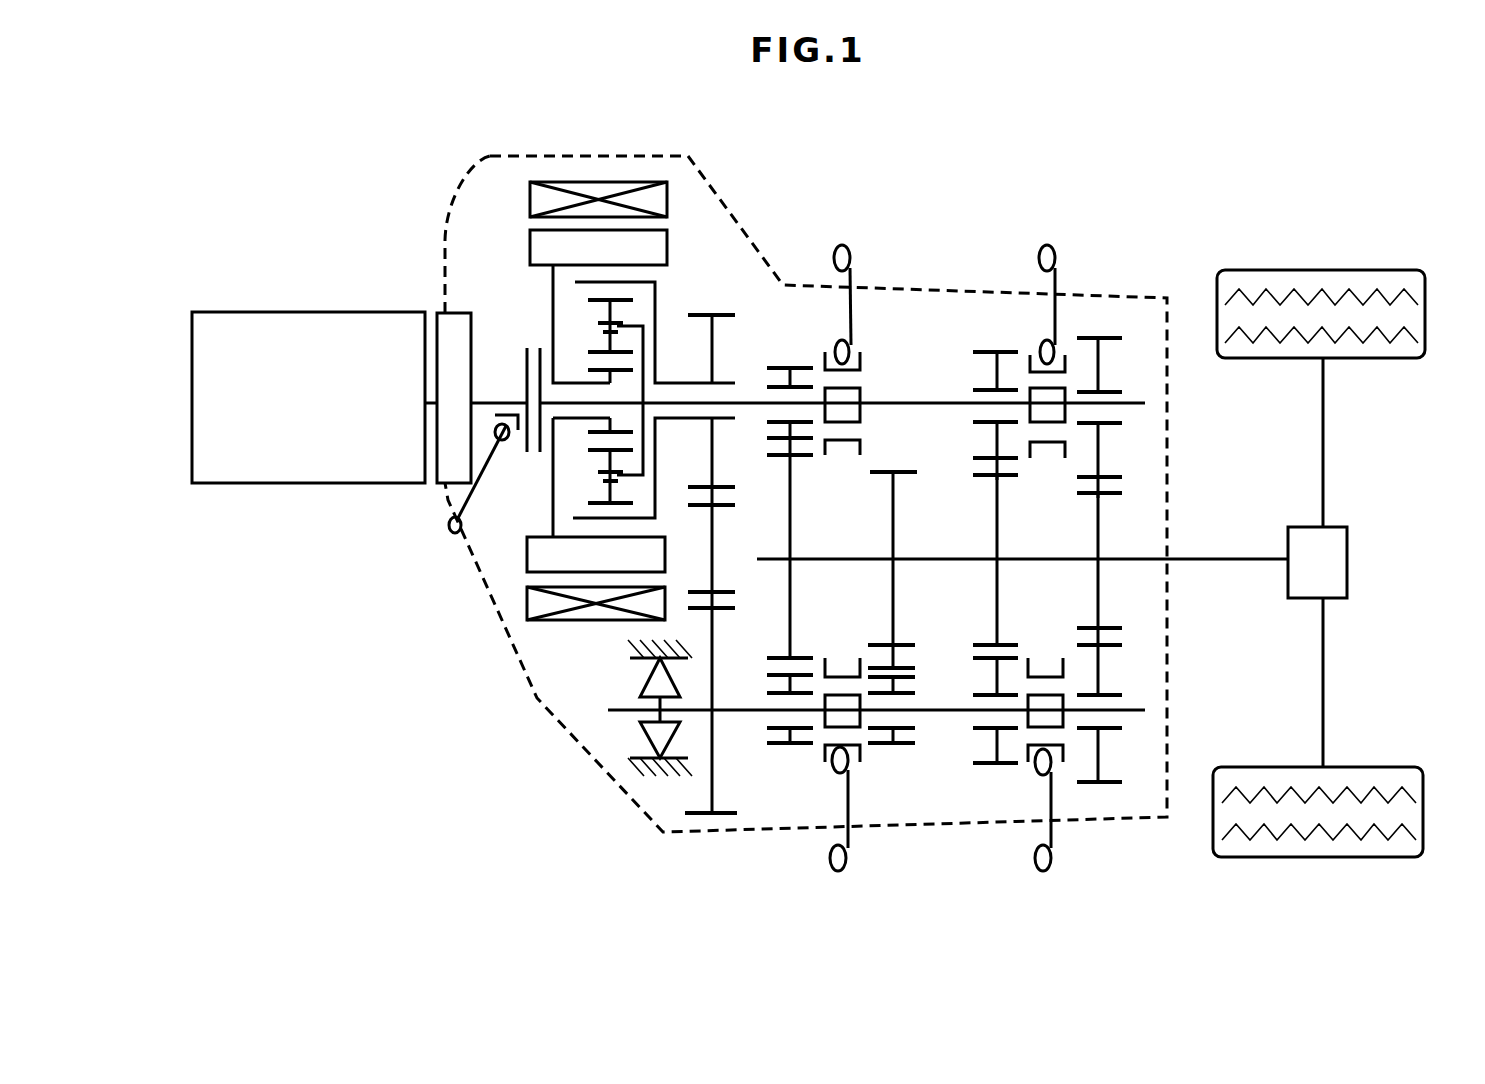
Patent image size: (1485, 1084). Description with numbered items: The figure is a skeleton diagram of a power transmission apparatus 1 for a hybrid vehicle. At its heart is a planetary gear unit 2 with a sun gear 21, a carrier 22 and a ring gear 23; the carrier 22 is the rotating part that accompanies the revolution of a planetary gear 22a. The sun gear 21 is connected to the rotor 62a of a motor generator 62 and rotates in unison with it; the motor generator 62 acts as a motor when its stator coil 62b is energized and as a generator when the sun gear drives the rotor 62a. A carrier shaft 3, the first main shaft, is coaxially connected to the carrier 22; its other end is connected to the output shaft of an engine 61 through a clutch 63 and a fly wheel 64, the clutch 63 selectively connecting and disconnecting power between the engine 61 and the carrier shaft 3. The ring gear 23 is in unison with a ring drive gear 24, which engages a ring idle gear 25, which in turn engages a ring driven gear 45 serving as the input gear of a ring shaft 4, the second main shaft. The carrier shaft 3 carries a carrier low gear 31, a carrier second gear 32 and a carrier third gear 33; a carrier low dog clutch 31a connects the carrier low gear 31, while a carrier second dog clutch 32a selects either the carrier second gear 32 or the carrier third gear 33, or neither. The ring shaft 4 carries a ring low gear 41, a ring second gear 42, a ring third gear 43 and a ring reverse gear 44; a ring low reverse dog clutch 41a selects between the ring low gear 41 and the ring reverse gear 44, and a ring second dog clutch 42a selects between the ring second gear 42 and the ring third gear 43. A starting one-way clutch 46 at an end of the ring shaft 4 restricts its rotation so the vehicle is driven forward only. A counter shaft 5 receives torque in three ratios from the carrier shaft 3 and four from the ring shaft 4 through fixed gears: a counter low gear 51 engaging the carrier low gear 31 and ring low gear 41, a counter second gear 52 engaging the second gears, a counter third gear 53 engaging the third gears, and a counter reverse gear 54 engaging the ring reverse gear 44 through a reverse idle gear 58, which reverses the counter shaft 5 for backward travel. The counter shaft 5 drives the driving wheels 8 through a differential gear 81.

The power transmission apparatus 1 is at (740, 216).
The planetary gear unit 2 is at (608, 388).
The carrier shaft 3 is at (1150, 402).
The ring shaft 4 is at (1150, 709).
The counter shaft 5 is at (1196, 543).
The driving wheels 8 is at (1230, 288).
The sun gear 21 is at (595, 369).
The carrier 22 is at (645, 363).
The planetary gear 22a is at (587, 300).
The ring gear 23 is at (620, 283).
The ring drive gear 24 is at (740, 317).
The ring idle gear 25 is at (725, 508).
The carrier low gear 31 is at (783, 368).
The carrier low dog clutch 31a is at (863, 359).
The carrier second gear 32 is at (988, 351).
The carrier second dog clutch 32a is at (1036, 358).
The carrier third gear 33 is at (1099, 337).
The ring low gear 41 is at (778, 744).
The ring low reverse dog clutch 41a is at (858, 748).
The ring second gear 42 is at (983, 765).
The ring second dog clutch 42a is at (1030, 757).
The ring third gear 43 is at (1121, 783).
The ring reverse gear 44 is at (900, 748).
The ring driven gear 45 is at (704, 816).
The starting one-way clutch 46 is at (645, 738).
The counter low gear 51 is at (782, 456).
The counter second gear 52 is at (1003, 478).
The counter third gear 53 is at (1108, 497).
The counter reverse gear 54 is at (905, 471).
The reverse idle gear 58 is at (905, 667).
The engine 61 is at (314, 397).
The motor generator 62 is at (627, 394).
The rotor 62a is at (597, 401).
The stator coil 62b is at (652, 197).
The clutch 63 is at (526, 370).
The fly wheel 64 is at (482, 398).
The differential gear 81 is at (1317, 562).